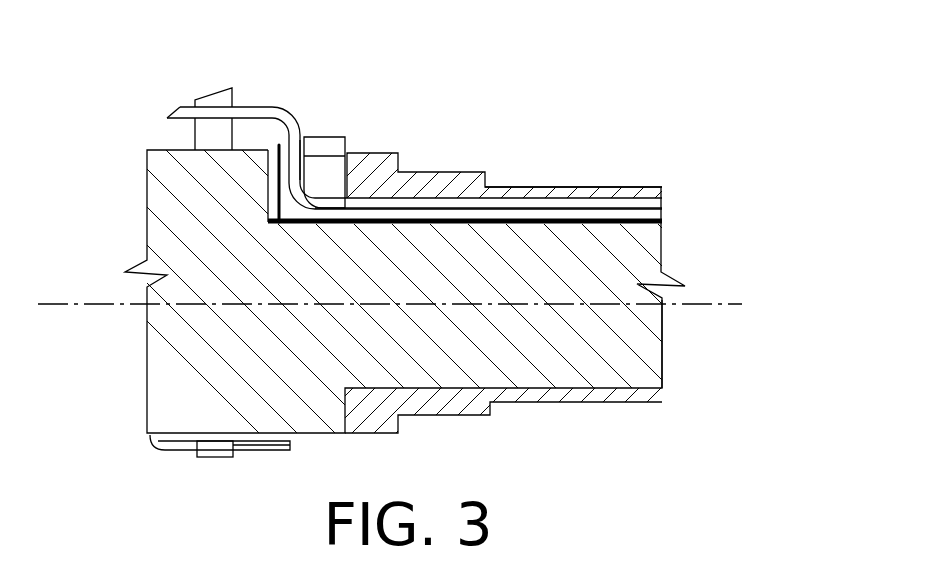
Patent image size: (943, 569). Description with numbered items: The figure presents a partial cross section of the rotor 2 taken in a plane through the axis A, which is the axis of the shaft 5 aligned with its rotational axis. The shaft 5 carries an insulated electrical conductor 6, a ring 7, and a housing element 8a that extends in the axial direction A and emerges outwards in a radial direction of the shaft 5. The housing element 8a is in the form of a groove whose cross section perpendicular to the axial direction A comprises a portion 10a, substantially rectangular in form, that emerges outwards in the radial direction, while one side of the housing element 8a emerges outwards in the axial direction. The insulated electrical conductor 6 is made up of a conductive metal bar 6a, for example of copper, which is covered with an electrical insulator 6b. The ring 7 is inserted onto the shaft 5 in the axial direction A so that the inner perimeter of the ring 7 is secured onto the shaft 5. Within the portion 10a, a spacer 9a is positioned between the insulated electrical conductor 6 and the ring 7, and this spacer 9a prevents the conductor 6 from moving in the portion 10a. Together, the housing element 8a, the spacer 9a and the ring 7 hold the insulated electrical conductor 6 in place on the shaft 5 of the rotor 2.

The rotor 2 is at (503, 55).
The shaft 5 is at (471, 272).
The insulated electrical conductor 6 is at (275, 104).
The conductive metal bar 6a is at (305, 130).
The electrical insulator 6b is at (483, 172).
The ring 7 is at (609, 167).
The housing element 8a is at (685, 237).
The spacer 9a is at (685, 203).
The portion 10a is at (343, 136).
The axis A is at (419, 304).